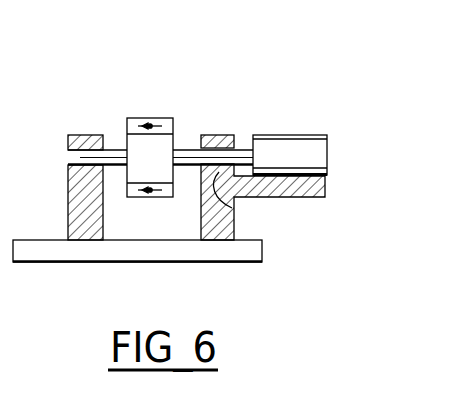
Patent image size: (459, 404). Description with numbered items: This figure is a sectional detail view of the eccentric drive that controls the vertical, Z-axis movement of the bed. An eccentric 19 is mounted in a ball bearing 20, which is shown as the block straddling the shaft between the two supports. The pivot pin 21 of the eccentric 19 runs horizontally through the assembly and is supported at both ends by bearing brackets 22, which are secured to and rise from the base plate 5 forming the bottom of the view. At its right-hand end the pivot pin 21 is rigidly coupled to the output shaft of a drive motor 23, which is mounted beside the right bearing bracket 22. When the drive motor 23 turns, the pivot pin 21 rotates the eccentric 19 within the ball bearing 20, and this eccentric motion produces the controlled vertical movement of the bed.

The base plate 5 is at (193, 251).
The eccentric 19 is at (163, 148).
The ball bearing 20 is at (137, 118).
The pivot pin 21 is at (186, 158).
The bearing brackets 22 is at (68, 185).
The drive motor 23 is at (294, 146).